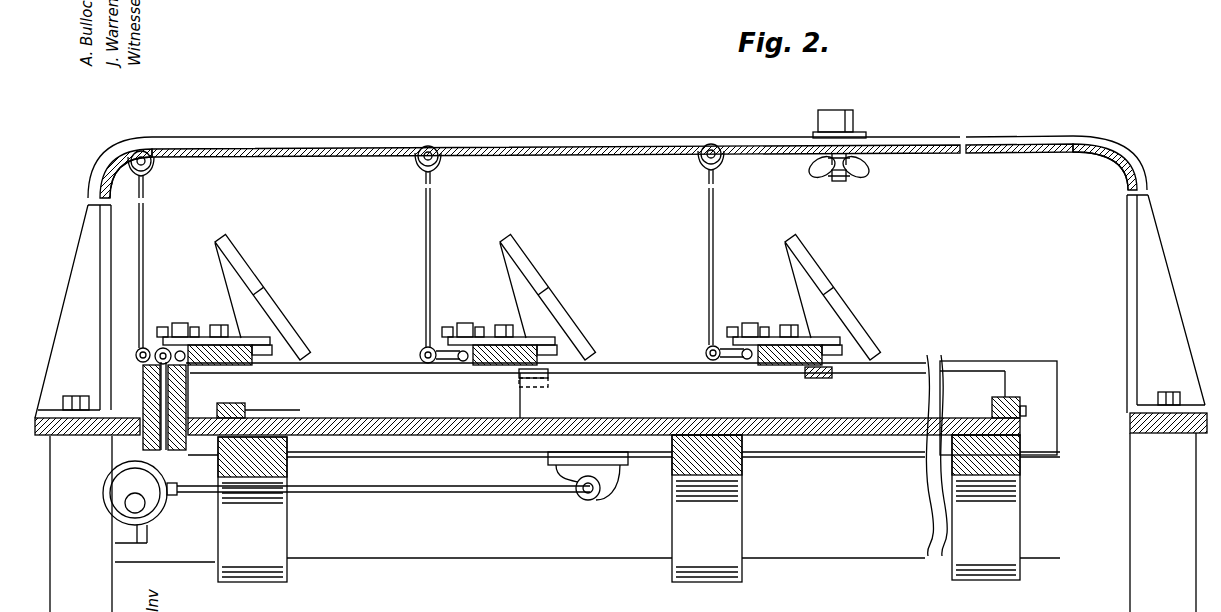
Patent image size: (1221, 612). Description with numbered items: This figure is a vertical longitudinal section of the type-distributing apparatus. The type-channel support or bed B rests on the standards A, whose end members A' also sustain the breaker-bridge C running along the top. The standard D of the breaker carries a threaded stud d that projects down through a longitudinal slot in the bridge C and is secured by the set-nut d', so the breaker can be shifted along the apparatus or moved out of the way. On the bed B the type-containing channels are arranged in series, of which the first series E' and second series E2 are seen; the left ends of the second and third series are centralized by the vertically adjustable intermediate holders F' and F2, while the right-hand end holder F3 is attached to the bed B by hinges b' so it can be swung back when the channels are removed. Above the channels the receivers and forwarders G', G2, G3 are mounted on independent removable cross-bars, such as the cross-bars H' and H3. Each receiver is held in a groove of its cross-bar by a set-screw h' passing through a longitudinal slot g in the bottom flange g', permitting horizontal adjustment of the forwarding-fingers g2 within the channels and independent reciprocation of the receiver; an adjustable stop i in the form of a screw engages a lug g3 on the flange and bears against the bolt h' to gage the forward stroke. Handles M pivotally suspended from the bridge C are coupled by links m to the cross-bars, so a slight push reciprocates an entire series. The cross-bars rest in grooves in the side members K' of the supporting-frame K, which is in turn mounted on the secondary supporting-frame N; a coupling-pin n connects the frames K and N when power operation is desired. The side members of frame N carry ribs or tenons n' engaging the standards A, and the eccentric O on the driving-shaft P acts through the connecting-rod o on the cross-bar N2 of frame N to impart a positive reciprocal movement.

The breaker-bridge C is at (617, 159).
The standard of the breaker D is at (840, 134).
The set-nut d' is at (854, 167).
The threaded stud d is at (832, 190).
The handles M is at (430, 246).
The receivers and forwarders of the first series G' is at (263, 297).
The receivers and forwarders of the second series G2 is at (548, 297).
The receivers and forwarders of the third series G3 is at (833, 297).
The longitudinal slots g is at (513, 290).
The bottom flange g' is at (295, 346).
The forwarding-fingers g2 is at (585, 363).
The lug g3 is at (457, 324).
The adjustable stop i is at (482, 324).
The set-screws h' is at (504, 321).
The cross-bar of the first series H' is at (502, 328).
The cross-bar of the third series H3 is at (770, 365).
The supporting-frame K is at (587, 399).
The side members of the supporting-frame K' is at (556, 360).
The intermediate holder F' is at (377, 392).
The intermediate holder F2 is at (833, 378).
The right-hand end holder F3 is at (1005, 397).
The first series of type-containing channels E' is at (267, 391).
The second series of type-containing channels E2 is at (566, 393).
The type-channel support or bed B is at (527, 418).
The links m is at (444, 364).
The secondary supporting-frame N is at (197, 432).
The coupling-pin n is at (123, 454).
The ribs or tenons n' is at (831, 466).
The cross-bar of the secondary frame N2 is at (588, 500).
The eccentric O is at (135, 493).
The driving-shaft P is at (135, 503).
The connecting-rod o is at (378, 496).
The standards A is at (624, 468).
The end members of the standards A' is at (621, 403).
The hinges b' is at (1034, 402).